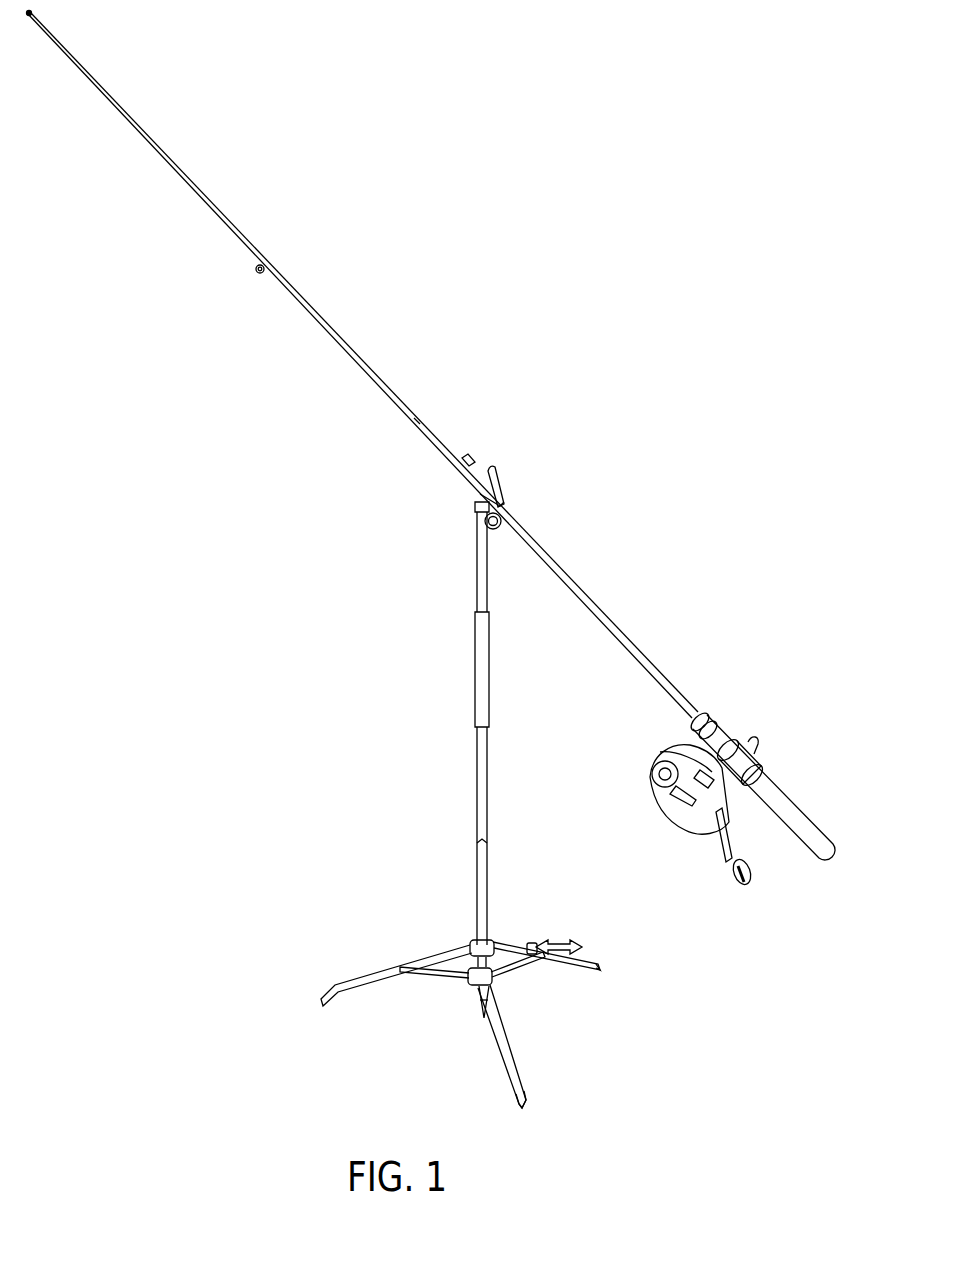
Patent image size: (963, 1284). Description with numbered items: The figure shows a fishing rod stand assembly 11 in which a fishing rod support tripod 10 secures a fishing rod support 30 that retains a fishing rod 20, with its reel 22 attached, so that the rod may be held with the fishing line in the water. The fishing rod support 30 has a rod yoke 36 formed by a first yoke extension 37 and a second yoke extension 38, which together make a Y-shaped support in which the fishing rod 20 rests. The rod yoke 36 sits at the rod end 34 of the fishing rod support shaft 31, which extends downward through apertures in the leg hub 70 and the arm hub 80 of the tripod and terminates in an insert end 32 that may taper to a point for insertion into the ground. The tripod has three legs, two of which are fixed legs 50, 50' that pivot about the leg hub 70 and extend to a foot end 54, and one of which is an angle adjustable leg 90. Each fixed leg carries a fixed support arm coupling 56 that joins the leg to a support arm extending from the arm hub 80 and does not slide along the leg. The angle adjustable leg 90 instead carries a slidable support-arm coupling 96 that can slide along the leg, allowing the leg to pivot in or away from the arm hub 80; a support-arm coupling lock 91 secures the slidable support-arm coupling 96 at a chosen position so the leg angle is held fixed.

The fishing rod support tripod 10 is at (332, 986).
The fishing rod stand assembly 11 is at (402, 618).
The fishing rod 20 is at (418, 423).
The reel 22 is at (667, 810).
The fishing rod support 30 is at (478, 705).
The fishing rod support shaft 31 is at (477, 640).
The insert end 32 is at (480, 1010).
The rod end 34 is at (477, 522).
The rod yoke 36 is at (477, 503).
The first yoke extension 37 is at (467, 460).
The second yoke extension 38 is at (495, 477).
The fixed leg 50 is at (396, 955).
The fixed leg 50' is at (547, 1046).
The foot end 54 is at (527, 1093).
The support arm coupling 56 is at (398, 965).
The leg hub 70 is at (468, 947).
The arm hub 80 is at (470, 988).
The angle adjustable leg 90 is at (512, 947).
The support-arm coupling lock 91 is at (533, 944).
The slidable support-arm coupling 96 is at (540, 957).